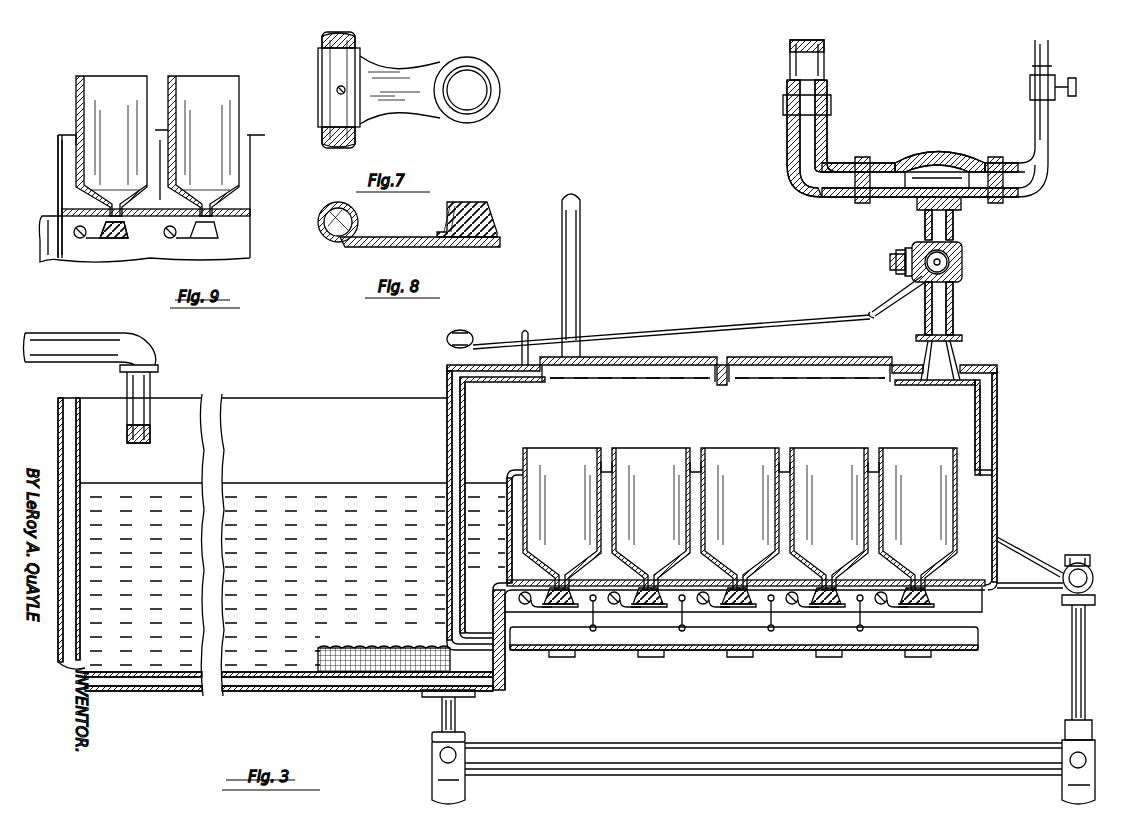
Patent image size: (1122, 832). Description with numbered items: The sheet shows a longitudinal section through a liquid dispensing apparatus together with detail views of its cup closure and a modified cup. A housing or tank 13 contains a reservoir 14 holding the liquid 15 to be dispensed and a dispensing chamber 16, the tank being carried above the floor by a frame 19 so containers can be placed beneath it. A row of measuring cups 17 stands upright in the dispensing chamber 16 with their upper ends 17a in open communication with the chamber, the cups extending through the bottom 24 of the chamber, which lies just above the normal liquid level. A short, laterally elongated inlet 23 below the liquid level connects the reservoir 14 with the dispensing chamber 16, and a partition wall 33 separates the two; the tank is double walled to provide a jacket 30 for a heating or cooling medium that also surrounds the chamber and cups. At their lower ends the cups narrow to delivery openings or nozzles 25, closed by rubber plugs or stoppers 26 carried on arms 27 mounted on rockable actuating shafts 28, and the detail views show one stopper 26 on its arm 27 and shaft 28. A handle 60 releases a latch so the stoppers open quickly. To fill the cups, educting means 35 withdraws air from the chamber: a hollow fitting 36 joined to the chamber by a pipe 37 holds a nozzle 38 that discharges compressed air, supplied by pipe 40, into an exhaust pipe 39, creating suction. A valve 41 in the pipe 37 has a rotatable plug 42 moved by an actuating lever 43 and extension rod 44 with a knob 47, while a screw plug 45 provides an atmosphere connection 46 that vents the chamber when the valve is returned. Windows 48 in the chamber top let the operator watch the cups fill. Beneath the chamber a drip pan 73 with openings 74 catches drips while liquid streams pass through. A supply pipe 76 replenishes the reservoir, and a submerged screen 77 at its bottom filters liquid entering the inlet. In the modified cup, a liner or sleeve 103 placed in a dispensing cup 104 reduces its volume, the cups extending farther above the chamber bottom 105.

In FIG. 3, the housing or tank 13 is at (360, 396).
In FIG. 3, the reservoir 14 is at (258, 405).
In FIG. 3, the liquid 15 is at (258, 485).
In FIG. 3, the dispensing chamber 16 is at (978, 404).
In FIG. 3, the measuring cup 17 is at (572, 456).
In FIG. 3, the upper ends of the measuring cups 17a is at (535, 452).
In FIG. 3, the frame 19 is at (652, 752).
In FIG. 3, the inlet 23 is at (520, 676).
In FIG. 3, the bottom of the dispensing chamber 24 is at (695, 462).
In FIG. 3, the delivery openings or nozzles 25 is at (528, 560).
In FIG. 7, the plugs or stoppers 26 is at (483, 80).
In FIG. 8, the plugs or stoppers 26 is at (488, 214).
In FIG. 3, the plugs or stoppers 26 is at (652, 606).
In FIG. 7, the arms 27 is at (405, 98).
In FIG. 8, the arms 27 is at (375, 242).
In FIG. 3, the arms 27 is at (540, 607).
In FIG. 7, the actuating shafts 28 is at (356, 40).
In FIG. 8, the actuating shafts 28 is at (328, 236).
In FIG. 3, the actuating shafts 28 is at (614, 606).
In FIG. 3, the space or jacket 30 is at (72, 482).
In FIG. 3, the partition wall 33 is at (450, 442).
In FIG. 3, the educting means 35 is at (958, 160).
In FIG. 3, the hollow body or fitting 36 is at (934, 162).
In FIG. 3, the pipe 37 is at (955, 292).
In FIG. 3, the nozzle or jet 38 is at (942, 172).
In FIG. 3, the exhaust pipe 39 is at (810, 128).
In FIG. 3, the pipe 40 is at (1050, 116).
In FIG. 3, the valve 41 is at (948, 262).
In FIG. 3, the rotatable plug 42 is at (912, 248).
In FIG. 3, the actuating lever 43 is at (880, 303).
In FIG. 3, the extension rod 44 is at (528, 340).
In FIG. 3, the screw plug 45 is at (898, 252).
In FIG. 3, the atmosphere connection 46 is at (890, 262).
In FIG. 3, the handle or knob 47 is at (456, 330).
In FIG. 3, the transparent wall sections or windows 48 is at (636, 357).
In FIG. 3, the handle 60 is at (574, 238).
In FIG. 3, the drip pan 73 is at (722, 652).
In FIG. 3, the openings 74 is at (916, 656).
In FIG. 3, the supply pipe 76 is at (70, 345).
In FIG. 3, the screen 77 is at (372, 648).
In FIG. 9, the liner or sleeve 103 is at (240, 100).
In FIG. 9, the dispensing cup 104 is at (252, 140).
In FIG. 9, the bottom of the dispensing chamber 105 is at (160, 132).